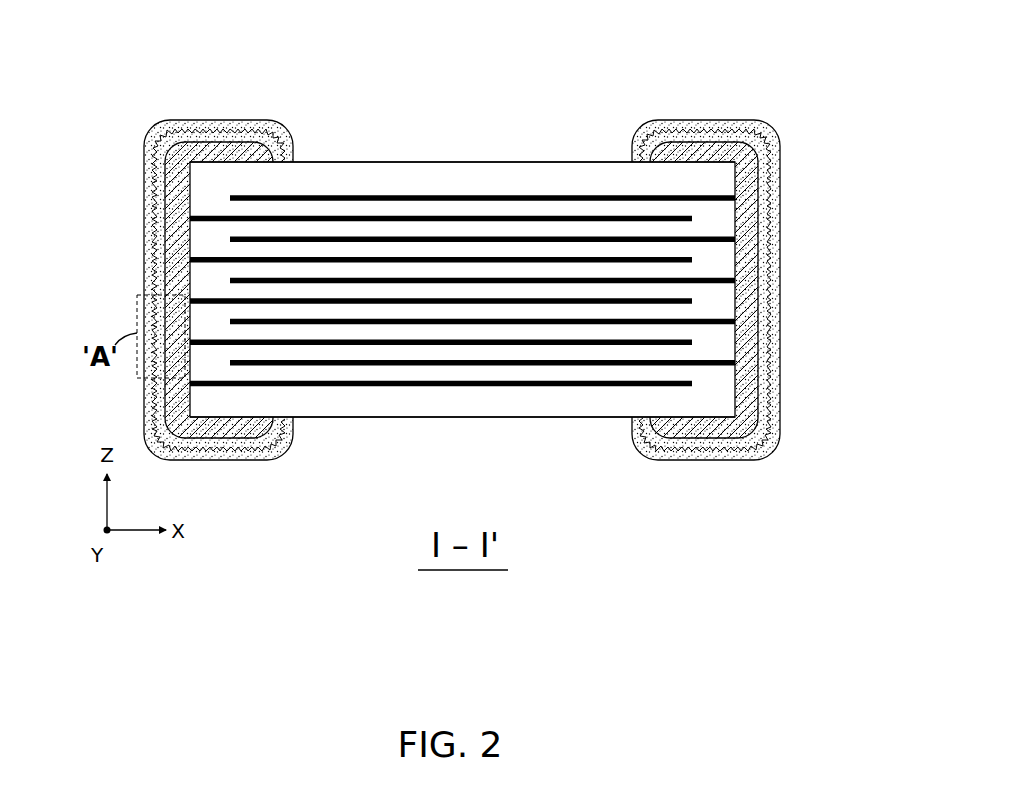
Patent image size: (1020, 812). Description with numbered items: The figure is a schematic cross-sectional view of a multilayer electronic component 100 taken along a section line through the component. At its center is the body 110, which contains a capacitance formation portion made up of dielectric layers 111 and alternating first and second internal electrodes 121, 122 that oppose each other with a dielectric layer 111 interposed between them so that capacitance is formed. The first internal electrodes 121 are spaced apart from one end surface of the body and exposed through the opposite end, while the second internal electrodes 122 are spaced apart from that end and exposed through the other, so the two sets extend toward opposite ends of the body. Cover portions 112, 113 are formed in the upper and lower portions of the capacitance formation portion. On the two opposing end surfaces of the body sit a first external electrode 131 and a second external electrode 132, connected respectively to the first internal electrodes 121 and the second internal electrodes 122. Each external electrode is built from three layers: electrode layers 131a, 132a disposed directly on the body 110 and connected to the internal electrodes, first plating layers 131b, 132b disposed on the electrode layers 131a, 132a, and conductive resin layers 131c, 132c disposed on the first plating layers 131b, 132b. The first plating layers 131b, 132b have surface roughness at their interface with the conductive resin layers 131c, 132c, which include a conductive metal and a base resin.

The multilayer electronic component 100 is at (461, 255).
The body 110 is at (555, 162).
The dielectric layer 111 is at (441, 207).
The cover portion 112 is at (497, 175).
The cover portion 113 is at (498, 418).
The first internal electrode 121 is at (385, 216).
The second internal electrode 122 is at (323, 195).
The first external electrode 131 is at (158, 290).
The electrode layer 131a is at (178, 198).
The first plating layer 131b is at (155, 240).
The conductive resin layer 131c is at (150, 282).
The second external electrode 132 is at (766, 290).
The electrode layer 132a is at (746, 190).
The first plating layer 132b is at (768, 235).
The conductive resin layer 132c is at (781, 278).